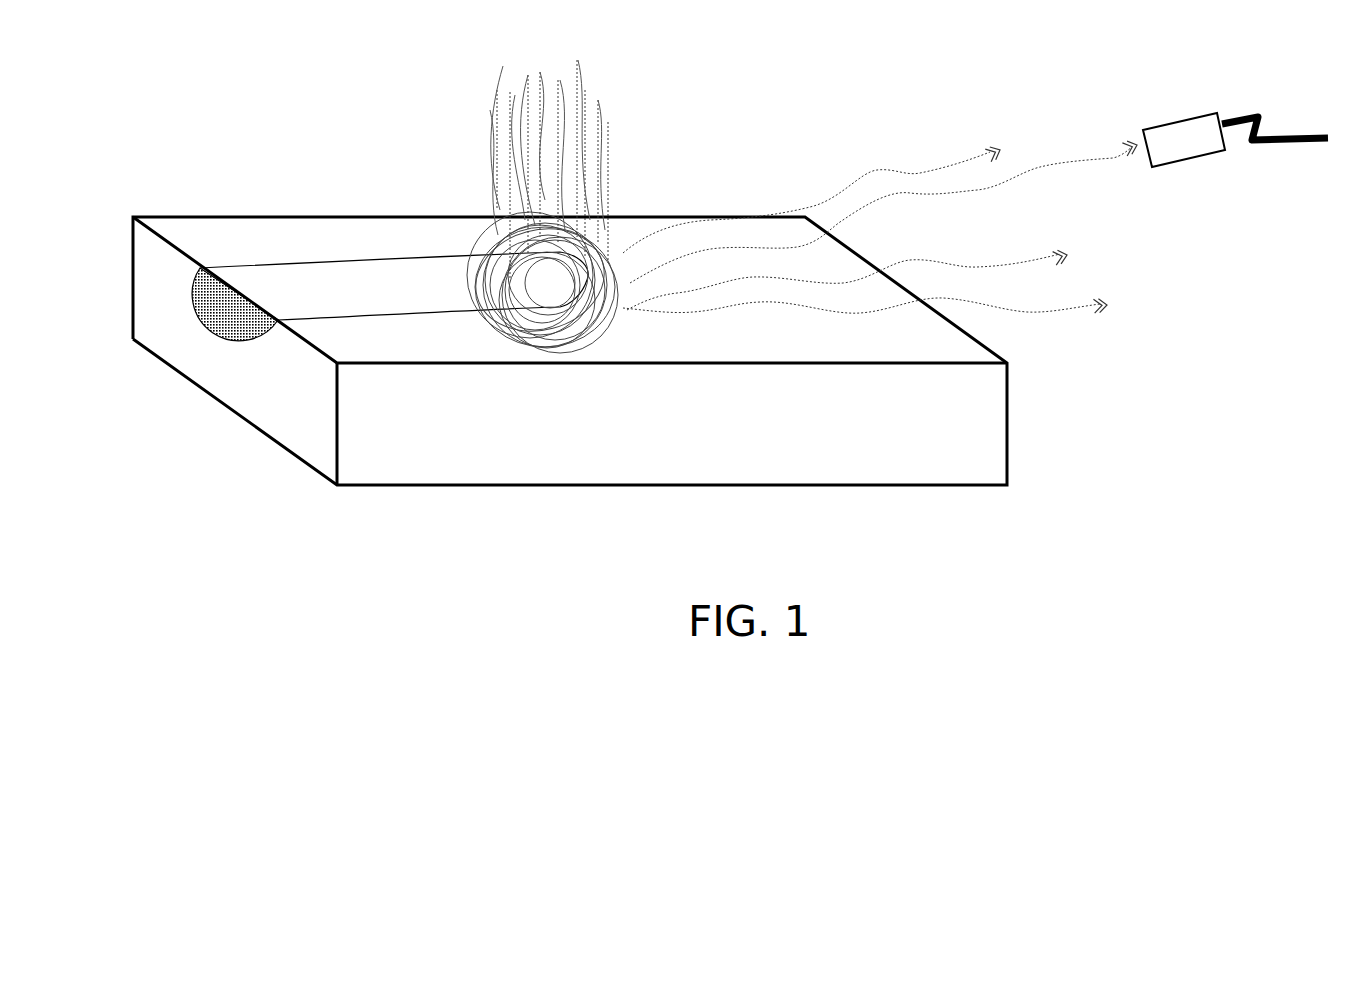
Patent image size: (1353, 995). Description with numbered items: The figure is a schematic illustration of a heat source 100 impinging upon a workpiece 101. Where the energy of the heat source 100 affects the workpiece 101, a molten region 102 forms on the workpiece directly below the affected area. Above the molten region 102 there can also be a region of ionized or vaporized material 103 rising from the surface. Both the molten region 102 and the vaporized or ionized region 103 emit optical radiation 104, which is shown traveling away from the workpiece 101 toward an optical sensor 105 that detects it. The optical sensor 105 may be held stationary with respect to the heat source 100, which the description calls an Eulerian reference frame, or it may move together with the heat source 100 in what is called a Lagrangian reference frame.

The heat source 100 is at (672, 79).
The workpiece 101 is at (716, 444).
The molten region 102 is at (287, 273).
The region of ionized or vaporized material 103 is at (442, 229).
The optical radiation 104 is at (1105, 265).
The optical sensor 105 is at (1235, 140).